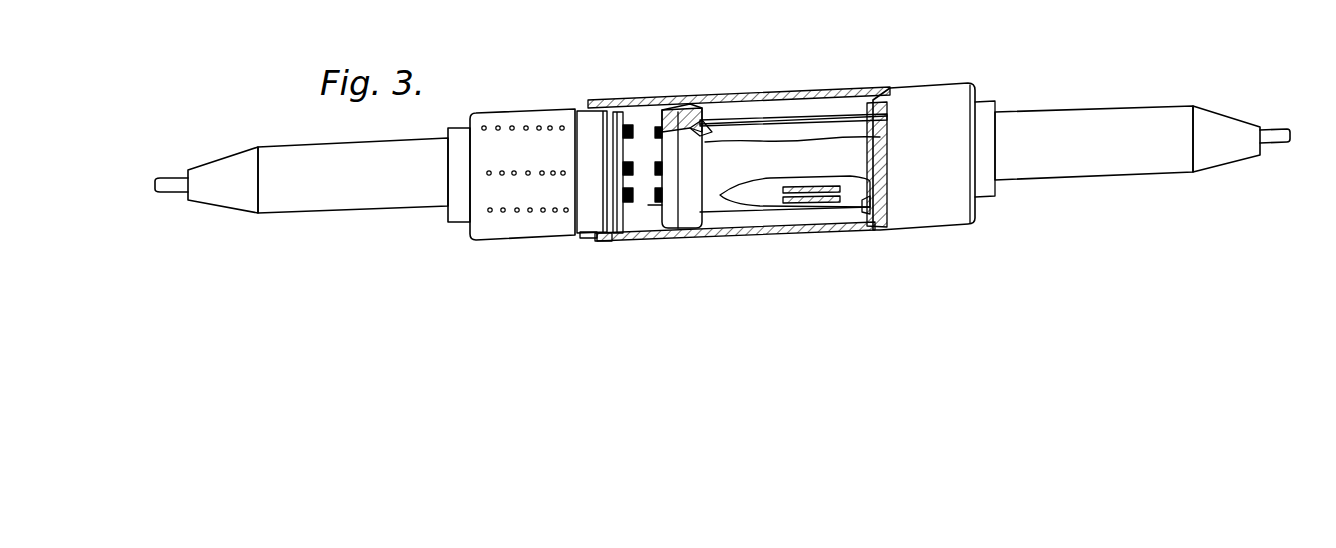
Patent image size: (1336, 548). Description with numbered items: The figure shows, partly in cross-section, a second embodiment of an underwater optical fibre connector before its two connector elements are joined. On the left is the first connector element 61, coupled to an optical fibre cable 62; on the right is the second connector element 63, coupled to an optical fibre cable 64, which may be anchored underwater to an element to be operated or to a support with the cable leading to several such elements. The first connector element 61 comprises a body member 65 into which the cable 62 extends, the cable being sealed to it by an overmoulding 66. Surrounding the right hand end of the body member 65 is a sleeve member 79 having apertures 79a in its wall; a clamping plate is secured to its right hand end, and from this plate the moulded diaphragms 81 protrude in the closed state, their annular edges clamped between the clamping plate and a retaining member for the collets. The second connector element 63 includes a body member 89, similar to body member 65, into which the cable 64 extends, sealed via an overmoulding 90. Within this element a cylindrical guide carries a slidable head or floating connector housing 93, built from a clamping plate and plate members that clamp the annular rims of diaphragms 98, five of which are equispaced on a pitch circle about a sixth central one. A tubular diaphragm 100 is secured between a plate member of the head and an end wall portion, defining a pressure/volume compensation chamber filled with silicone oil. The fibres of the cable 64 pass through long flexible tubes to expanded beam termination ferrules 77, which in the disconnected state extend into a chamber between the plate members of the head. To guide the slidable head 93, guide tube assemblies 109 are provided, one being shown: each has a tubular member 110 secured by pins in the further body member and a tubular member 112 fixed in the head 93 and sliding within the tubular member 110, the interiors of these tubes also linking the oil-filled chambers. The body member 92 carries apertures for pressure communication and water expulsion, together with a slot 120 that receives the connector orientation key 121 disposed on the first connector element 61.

The first connector element 61 is at (427, 120).
The optical fibre cable 62 is at (170, 181).
The second connector element 63 is at (917, 75).
The optical fibre cable 64 is at (1278, 128).
The body member 65 is at (343, 211).
The overmoulding 66 is at (240, 150).
The expanded beam termination ferrules 77 is at (698, 133).
The sleeve member 79 is at (517, 112).
The apertures 79a is at (527, 126).
The diaphragms 81 is at (630, 130).
The body member 89 is at (1048, 112).
The overmoulding 90 is at (1205, 107).
The body member 92 is at (860, 90).
The slidable head 93 is at (697, 97).
The diaphragms 98 is at (655, 205).
The tubular diaphragm 100 is at (765, 125).
The guide tube assemblies 109 is at (830, 210).
The tubular members 110 is at (868, 215).
The tubular members 112 is at (780, 195).
The slot 120 is at (595, 235).
The connector orientation key 121 is at (587, 238).